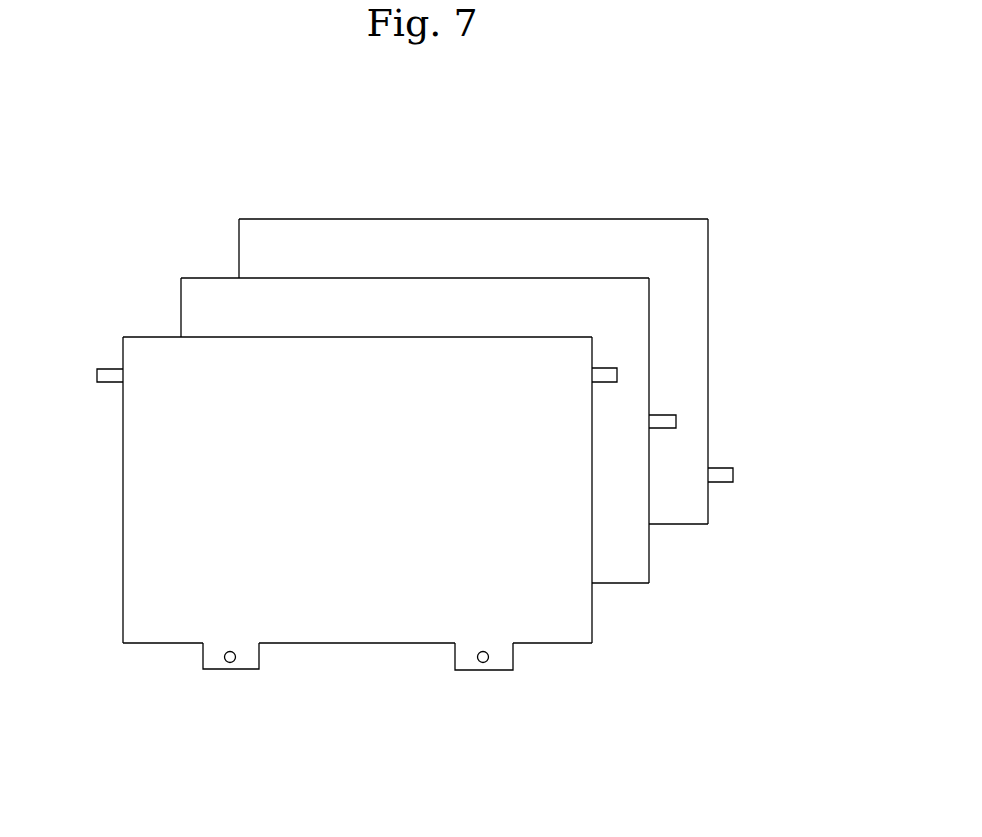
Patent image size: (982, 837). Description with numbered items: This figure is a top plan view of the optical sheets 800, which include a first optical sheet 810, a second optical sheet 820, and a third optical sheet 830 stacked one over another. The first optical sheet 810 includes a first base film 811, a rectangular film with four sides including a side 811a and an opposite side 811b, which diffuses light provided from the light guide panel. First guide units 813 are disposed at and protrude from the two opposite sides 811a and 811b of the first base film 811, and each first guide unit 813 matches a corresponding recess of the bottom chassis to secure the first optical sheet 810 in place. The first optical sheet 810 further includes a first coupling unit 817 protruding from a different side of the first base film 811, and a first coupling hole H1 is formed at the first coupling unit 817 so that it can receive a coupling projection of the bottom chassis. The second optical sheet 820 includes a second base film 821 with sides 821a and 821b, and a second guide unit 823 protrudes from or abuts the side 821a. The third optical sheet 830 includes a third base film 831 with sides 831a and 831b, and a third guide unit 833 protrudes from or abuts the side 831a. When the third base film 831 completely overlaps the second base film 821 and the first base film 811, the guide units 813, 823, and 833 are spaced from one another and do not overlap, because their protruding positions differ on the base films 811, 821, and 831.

The optical sheets 800 is at (509, 157).
The first optical sheet 810 is at (337, 337).
The first base film 811 is at (358, 620).
The side of first base film 811a is at (592, 612).
The side of first base film 811b is at (123, 540).
The first guide unit 813 is at (617, 375).
The first coupling unit 817 is at (243, 670).
The first coupling hole H1 is at (230, 663).
The second optical sheet 820 is at (410, 277).
The second base film 821 is at (546, 290).
The side of second base film 821a is at (649, 553).
The side of second base film 821b is at (181, 305).
The second guide unit 823 is at (676, 421).
The third optical sheet 830 is at (482, 218).
The third base film 831 is at (474, 341).
The side of third base film 831a is at (708, 500).
The side of third base film 831b is at (239, 245).
The third guide unit 833 is at (733, 476).